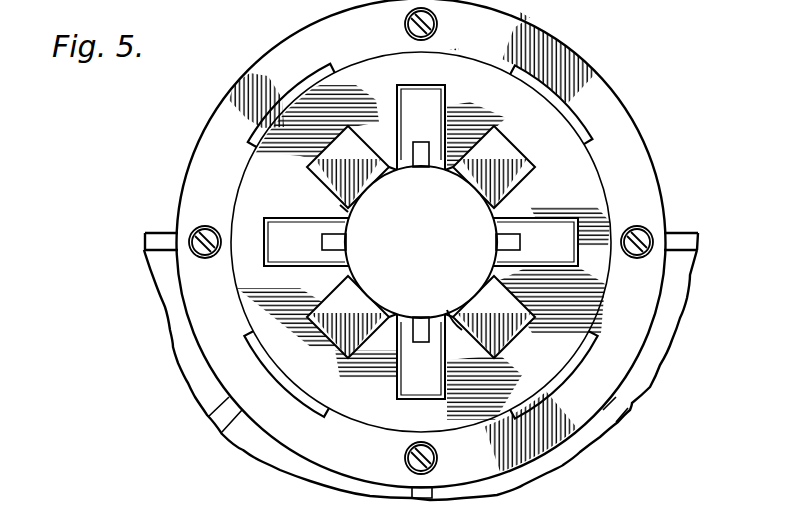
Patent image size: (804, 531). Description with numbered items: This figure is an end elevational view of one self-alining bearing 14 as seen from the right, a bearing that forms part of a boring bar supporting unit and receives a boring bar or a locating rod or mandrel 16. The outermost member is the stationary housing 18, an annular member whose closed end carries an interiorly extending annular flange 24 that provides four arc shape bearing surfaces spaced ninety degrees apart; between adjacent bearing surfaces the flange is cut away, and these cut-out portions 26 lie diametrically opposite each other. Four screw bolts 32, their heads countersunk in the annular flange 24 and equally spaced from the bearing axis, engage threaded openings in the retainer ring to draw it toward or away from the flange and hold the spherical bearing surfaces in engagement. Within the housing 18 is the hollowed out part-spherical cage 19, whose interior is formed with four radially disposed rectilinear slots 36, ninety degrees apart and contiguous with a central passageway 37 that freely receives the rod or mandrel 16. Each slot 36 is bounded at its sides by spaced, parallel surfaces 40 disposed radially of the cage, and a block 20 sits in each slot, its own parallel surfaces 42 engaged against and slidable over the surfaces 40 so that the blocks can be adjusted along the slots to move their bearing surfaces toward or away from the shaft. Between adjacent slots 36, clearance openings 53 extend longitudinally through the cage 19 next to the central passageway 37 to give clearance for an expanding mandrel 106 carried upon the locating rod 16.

The self-alining bearing 14 is at (185, 196).
The locating rod or mandrel 16 is at (421, 242).
The stationary housing 18 is at (645, 174).
The cage 19 is at (258, 280).
The block 20 is at (421, 242).
The interiorly extending annular flange 24 is at (610, 290).
The cut-out portion 26 is at (258, 138).
The screw bolt 32 is at (405, 24).
The rectilinear slot 36 is at (370, 148).
The central passageway 37 is at (346, 208).
The parallel surface 40 is at (448, 325).
The parallel surface of block 42 is at (510, 193).
The clearance opening 53 is at (421, 242).
The expanding mandrel 106 is at (413, 166).